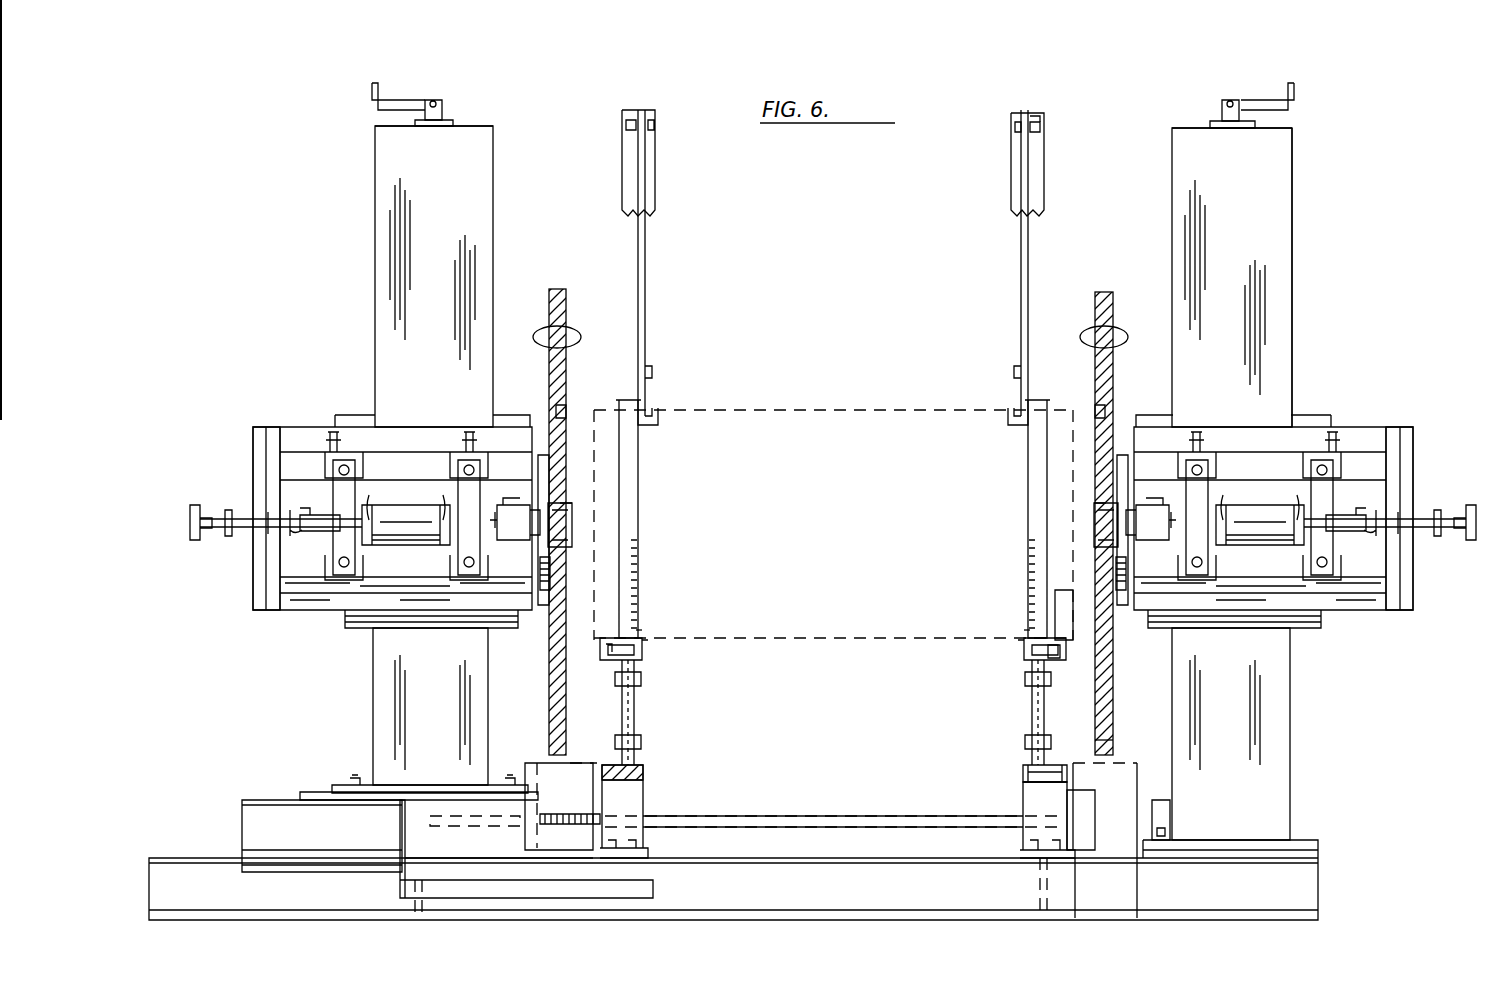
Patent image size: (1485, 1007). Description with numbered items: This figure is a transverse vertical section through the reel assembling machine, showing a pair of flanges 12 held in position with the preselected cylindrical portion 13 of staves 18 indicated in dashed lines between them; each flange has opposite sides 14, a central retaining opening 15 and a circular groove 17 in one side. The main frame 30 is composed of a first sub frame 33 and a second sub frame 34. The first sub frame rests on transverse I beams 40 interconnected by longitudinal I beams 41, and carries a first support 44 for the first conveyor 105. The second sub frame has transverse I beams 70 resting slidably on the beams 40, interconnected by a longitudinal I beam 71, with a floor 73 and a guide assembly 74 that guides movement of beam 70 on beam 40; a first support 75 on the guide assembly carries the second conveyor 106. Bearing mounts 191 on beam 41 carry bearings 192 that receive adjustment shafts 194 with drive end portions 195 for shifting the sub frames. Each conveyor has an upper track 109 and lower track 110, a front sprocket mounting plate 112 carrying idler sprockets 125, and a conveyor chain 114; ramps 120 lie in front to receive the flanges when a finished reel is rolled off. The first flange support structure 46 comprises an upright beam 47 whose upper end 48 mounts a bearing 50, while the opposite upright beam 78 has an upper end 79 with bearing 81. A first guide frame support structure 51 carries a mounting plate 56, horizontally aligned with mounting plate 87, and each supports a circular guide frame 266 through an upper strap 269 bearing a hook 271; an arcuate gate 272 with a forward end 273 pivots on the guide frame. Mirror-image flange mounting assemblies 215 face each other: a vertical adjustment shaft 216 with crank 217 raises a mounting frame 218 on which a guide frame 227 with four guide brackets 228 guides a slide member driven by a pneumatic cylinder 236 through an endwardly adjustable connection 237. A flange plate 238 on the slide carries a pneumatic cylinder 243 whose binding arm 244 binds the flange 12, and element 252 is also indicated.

The flange 12 is at (556, 290).
The cylindrical portion 13 is at (838, 399).
The side 14 is at (834, 331).
The central retaining opening 15 is at (568, 504).
The circular groove 17 is at (565, 410).
The stave 18 is at (746, 402).
The main frame 30 is at (1014, 803).
The first sub frame 33 is at (1019, 669).
The second sub frame 34 is at (650, 661).
The transverse I beam 40 is at (185, 866).
The longitudinal I beam 41 is at (420, 917).
The first support 44 is at (1025, 828).
The first flange support structure 46 is at (1304, 284).
The upright beam 47 is at (1280, 340).
The upper end 48 is at (1278, 137).
The bearing 50 is at (1220, 121).
The first guide frame support structure 51 is at (1015, 167).
The mounting plate 56 is at (1040, 121).
The transverse I beam 70 is at (275, 812).
The longitudinal I beam 71 is at (530, 775).
The floor 73 is at (316, 795).
The guide assembly 74 is at (400, 889).
The first support 75 is at (630, 800).
The upright beam 78 is at (500, 189).
The upper end 79 is at (488, 126).
The bearing 81 is at (452, 122).
The mounting plate 87 is at (622, 118).
The first conveyor 105 is at (1019, 626).
The second conveyor 106 is at (650, 635).
The upper track 109 is at (1070, 632).
The lower track 110 is at (1030, 775).
The front sprocket mounting plate 112 is at (1112, 746).
The conveyor chain 114 is at (1070, 790).
The ramp 120 is at (565, 760).
The idler sprocket 125 is at (632, 740).
The bearing mount 191 is at (1105, 888).
The bearing 192 is at (1085, 805).
The adjustment shaft 194 is at (752, 822).
The drive end portion 195 is at (1152, 822).
The flange mounting assembly 215 is at (364, 410).
The vertical adjustment shaft 216 is at (434, 100).
The crank 217 is at (372, 95).
The mounting frame 218 is at (252, 616).
The guide frame 227 is at (258, 468).
The guide bracket 228 is at (469, 462).
The pneumatic cylinder 236 is at (418, 512).
The endwardly adjustable connection 237 is at (300, 545).
The flange plate 238 is at (547, 570).
The pneumatic cylinder 243 is at (518, 507).
The binding arm 244 is at (567, 520).
The handwheel 252 is at (192, 524).
The circular guide frame 266 is at (645, 488).
The upper strap 269 is at (645, 278).
The hook 271 is at (652, 372).
The arcuate gate 272 is at (656, 639).
The forward end 273 is at (1062, 648).